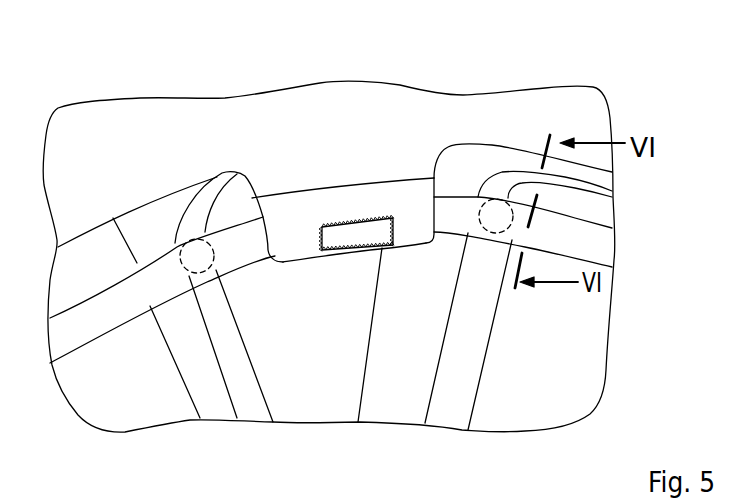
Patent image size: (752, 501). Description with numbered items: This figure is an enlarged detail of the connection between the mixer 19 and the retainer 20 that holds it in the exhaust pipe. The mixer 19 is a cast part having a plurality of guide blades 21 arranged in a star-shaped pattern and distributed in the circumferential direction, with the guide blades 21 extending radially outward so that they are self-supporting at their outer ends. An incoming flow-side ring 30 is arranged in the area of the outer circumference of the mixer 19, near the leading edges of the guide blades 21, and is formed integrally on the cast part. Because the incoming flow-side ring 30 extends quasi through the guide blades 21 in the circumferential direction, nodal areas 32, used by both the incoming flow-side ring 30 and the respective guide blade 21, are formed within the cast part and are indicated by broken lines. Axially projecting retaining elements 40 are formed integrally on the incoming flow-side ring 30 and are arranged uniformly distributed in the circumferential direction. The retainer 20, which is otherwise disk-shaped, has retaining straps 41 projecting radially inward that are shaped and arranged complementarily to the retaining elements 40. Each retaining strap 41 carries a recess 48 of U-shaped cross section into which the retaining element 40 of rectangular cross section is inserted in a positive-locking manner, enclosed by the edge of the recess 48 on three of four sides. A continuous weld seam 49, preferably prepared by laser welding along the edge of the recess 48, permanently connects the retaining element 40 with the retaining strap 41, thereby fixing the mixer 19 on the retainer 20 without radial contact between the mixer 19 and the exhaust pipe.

The mixer 19 is at (192, 198).
The retainer 20 is at (329, 256).
The guide blades 21 is at (137, 397).
The incoming flow-side ring 30 is at (597, 224).
The nodal areas 32 is at (175, 245).
The retaining elements 40 is at (352, 250).
The retaining straps 41 is at (300, 248).
The recess 48 is at (333, 228).
The weld seam 49 is at (362, 215).